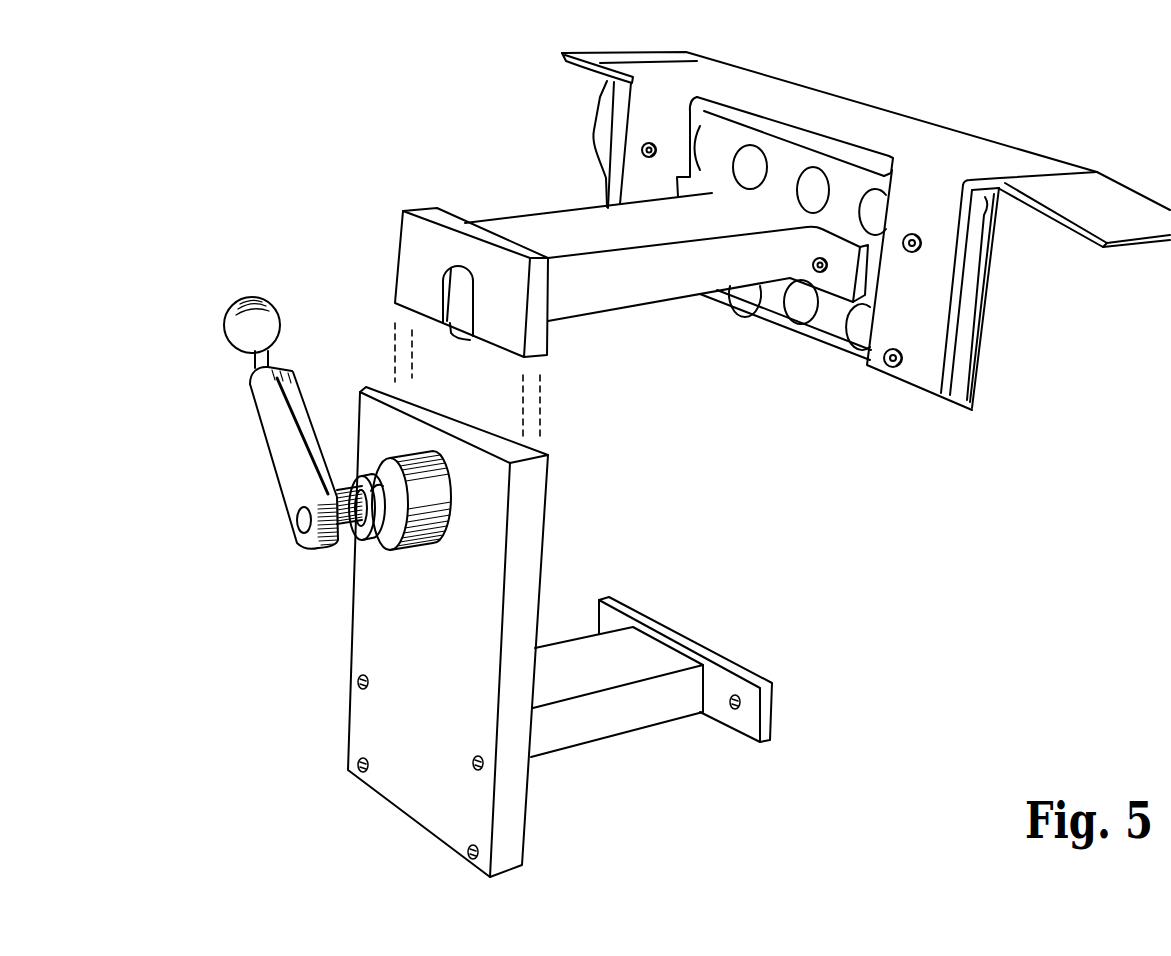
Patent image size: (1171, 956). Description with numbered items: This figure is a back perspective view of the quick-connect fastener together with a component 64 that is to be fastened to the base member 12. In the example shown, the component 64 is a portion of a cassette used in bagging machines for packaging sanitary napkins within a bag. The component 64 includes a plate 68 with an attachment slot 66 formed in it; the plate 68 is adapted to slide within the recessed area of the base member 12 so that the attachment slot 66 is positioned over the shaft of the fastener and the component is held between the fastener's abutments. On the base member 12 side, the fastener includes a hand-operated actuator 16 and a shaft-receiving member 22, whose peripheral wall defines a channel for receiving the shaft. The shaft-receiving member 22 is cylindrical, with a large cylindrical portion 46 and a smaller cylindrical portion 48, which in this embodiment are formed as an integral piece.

The component 64 is at (500, 129).
The plate 68 is at (410, 275).
The attachment slot 66 is at (505, 343).
The base member 12 is at (474, 596).
The hand-operated actuator 16 is at (272, 438).
The shaft-receiving member 22 is at (437, 493).
The smaller cylindrical portion 48 is at (378, 548).
The large cylindrical portion 46 is at (418, 552).